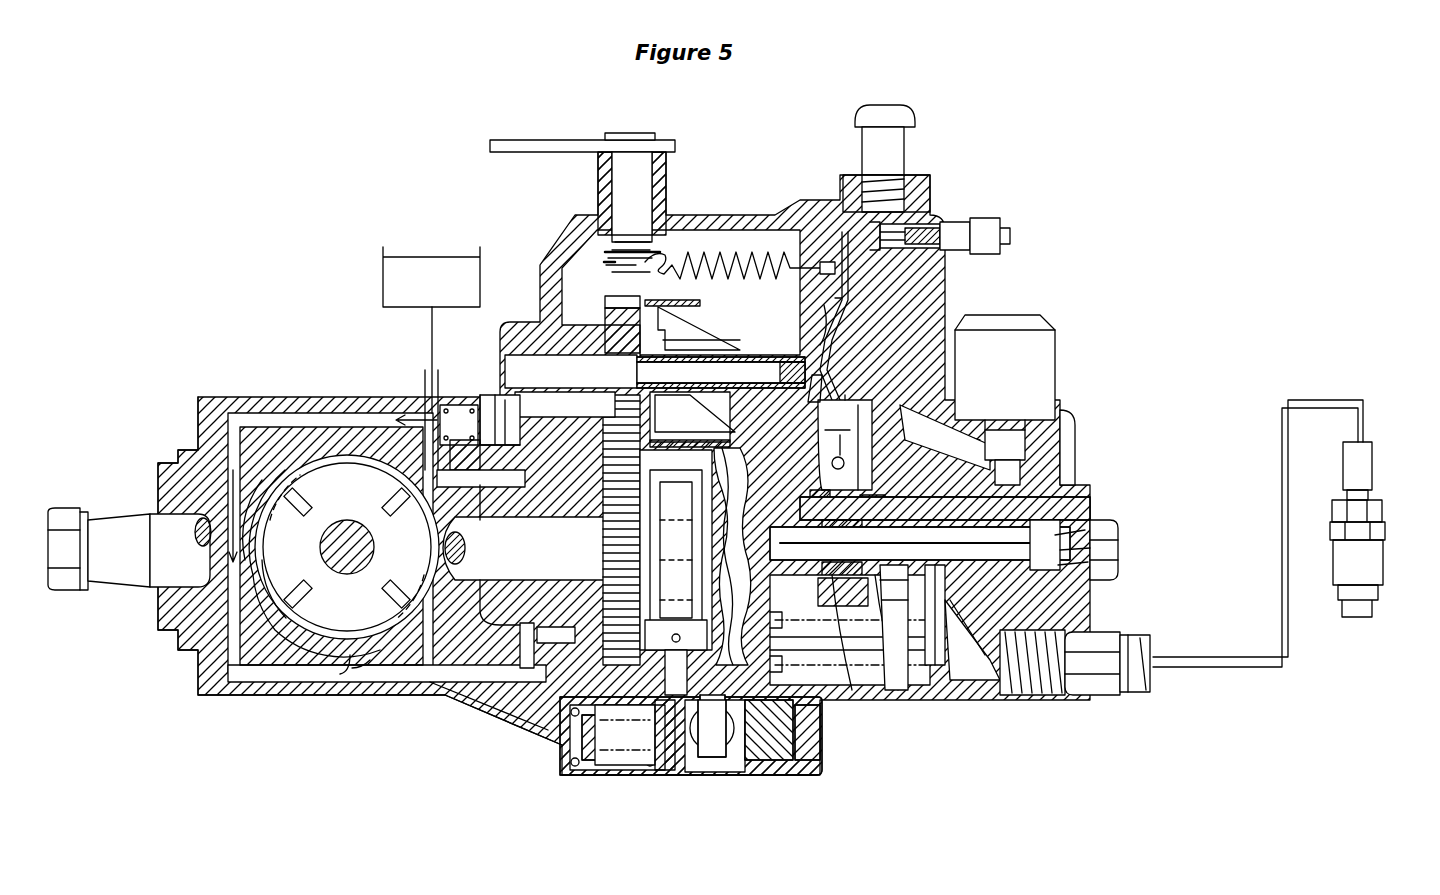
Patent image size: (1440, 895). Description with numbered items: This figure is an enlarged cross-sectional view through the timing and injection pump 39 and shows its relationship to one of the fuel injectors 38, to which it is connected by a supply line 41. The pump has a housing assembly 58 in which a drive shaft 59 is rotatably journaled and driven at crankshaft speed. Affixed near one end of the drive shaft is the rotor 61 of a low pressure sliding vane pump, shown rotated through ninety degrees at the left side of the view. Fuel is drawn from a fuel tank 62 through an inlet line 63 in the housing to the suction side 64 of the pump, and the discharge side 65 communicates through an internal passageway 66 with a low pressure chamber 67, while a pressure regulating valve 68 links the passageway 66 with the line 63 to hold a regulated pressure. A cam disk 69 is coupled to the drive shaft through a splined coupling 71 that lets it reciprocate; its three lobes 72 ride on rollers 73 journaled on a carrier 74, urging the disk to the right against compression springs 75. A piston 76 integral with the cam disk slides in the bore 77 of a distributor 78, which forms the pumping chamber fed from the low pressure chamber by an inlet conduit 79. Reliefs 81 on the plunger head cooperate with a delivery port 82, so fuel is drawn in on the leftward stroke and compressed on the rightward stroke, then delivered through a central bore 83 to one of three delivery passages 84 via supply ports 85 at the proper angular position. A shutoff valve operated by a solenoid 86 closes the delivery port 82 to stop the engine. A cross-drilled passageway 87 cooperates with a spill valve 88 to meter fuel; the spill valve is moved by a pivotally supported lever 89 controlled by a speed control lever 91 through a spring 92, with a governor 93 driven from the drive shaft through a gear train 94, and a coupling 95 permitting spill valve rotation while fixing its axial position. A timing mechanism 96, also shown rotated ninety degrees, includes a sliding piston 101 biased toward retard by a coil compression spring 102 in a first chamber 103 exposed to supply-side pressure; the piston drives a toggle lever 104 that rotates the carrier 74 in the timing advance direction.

The fuel injector 38 is at (1383, 512).
The timing and injection pump 39 is at (1000, 303).
The supply line 41 is at (1280, 500).
The housing assembly 58 is at (398, 700).
The drive shaft 59 is at (120, 575).
The rotor 61 is at (298, 462).
The fuel tank 62 is at (432, 247).
The inlet line 63 is at (290, 683).
The suction side 64 is at (352, 663).
The discharge side 65 is at (245, 462).
The internal passageway 66 is at (507, 425).
The pressure regulating valve 68 is at (460, 402).
The low pressure chamber 67 is at (810, 408).
The cam disk 69 is at (765, 750).
The splined coupling 71 is at (606, 560).
The lobes 72 is at (737, 462).
The rollers 73 is at (655, 780).
The carrier 74 is at (600, 760).
The compression springs 75 is at (930, 640).
The piston 76 is at (880, 620).
The bore 77 is at (1085, 505).
The distributor 78 is at (1030, 495).
The inlet conduit 79 is at (1075, 445).
The reliefs 81 is at (1035, 692).
The delivery port 82 is at (1070, 490).
The central bore 83 is at (940, 420).
The delivery passages 84 is at (960, 600).
The supply ports 85 is at (912, 575).
The solenoid 86 is at (1055, 322).
The cross-drilled passageway 87 is at (822, 540).
The spill valve 88 is at (840, 610).
The lever 89 is at (950, 292).
The speed control lever 91 is at (622, 170).
The spring 92 is at (745, 262).
The governor 93 is at (720, 330).
The gear train 94 is at (605, 302).
The coupling 95 is at (870, 335).
The timing mechanism 96 is at (695, 780).
The sliding piston 101 is at (818, 755).
The coil compression spring 102 is at (575, 745).
The first chamber 103 is at (580, 735).
The toggle lever 104 is at (718, 735).